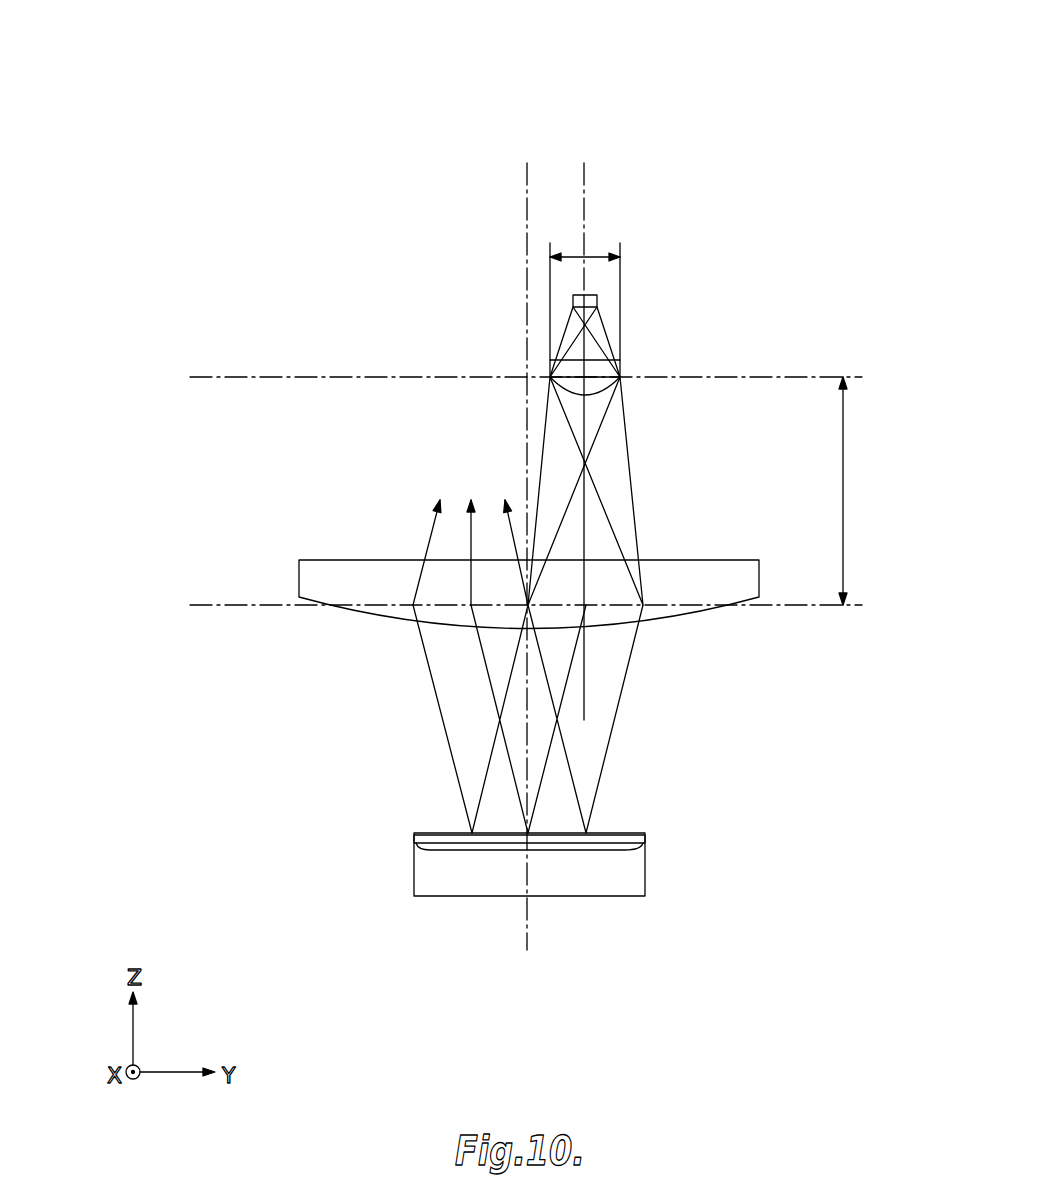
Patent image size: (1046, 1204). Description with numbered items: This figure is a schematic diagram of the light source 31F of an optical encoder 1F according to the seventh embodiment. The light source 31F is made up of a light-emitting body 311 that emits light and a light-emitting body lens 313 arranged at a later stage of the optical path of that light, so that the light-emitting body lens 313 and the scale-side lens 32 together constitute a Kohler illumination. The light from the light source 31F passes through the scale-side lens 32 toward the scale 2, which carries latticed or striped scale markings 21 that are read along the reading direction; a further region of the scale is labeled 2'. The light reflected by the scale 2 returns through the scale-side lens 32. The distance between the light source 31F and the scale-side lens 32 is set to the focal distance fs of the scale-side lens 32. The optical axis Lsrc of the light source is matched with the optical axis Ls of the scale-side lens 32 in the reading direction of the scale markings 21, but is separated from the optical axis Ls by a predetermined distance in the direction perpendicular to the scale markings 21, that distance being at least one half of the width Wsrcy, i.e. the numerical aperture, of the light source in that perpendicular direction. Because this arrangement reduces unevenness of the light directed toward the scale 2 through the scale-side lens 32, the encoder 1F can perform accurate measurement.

The optical encoder 1F is at (543, 483).
The light source 31F is at (670, 400).
The light-emitting body 311 is at (597, 302).
The light-emitting body lens 313 is at (597, 385).
The scale-side lens 32 is at (740, 573).
The scale 2 is at (567, 849).
The scale markings 21 is at (618, 833).
The inner layer of object 2' is at (529, 891).
The optical axis of the scale-side lens Ls is at (527, 183).
The optical axis of the light source Lsrc is at (584, 183).
The width of the light source Wsrcy is at (592, 257).
The focal distance of the scale-side lens fs is at (858, 491).